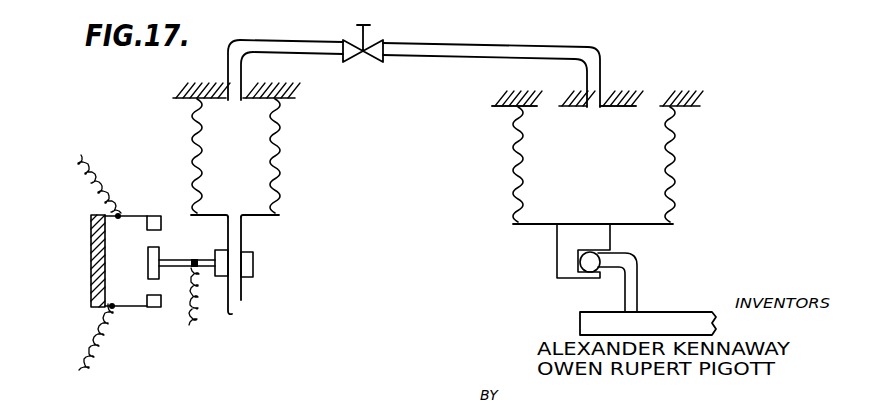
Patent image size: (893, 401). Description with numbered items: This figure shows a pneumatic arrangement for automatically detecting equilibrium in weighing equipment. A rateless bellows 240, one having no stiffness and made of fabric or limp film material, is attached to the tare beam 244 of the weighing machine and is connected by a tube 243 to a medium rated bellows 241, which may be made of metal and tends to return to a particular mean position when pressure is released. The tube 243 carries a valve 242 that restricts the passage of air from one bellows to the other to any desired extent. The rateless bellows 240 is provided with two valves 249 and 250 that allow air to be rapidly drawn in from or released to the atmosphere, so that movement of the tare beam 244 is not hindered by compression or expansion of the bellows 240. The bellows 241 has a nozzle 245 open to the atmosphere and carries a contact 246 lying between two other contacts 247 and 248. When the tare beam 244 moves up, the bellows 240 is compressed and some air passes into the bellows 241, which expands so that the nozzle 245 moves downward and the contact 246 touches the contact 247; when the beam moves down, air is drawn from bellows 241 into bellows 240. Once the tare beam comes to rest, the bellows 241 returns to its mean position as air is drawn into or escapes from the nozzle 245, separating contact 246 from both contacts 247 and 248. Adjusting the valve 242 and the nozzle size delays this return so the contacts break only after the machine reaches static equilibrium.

The rateless bellows 240 is at (664, 190).
The medium rated bellows 241 is at (272, 177).
The valve 242 is at (366, 45).
The tube 243 is at (594, 58).
The tare beam 244 is at (705, 306).
The nozzle 245 is at (241, 300).
The contact 246 is at (184, 267).
The contact 247 is at (152, 308).
The contact 248 is at (157, 214).
The valve 249 is at (537, 106).
The valve 250 is at (642, 101).